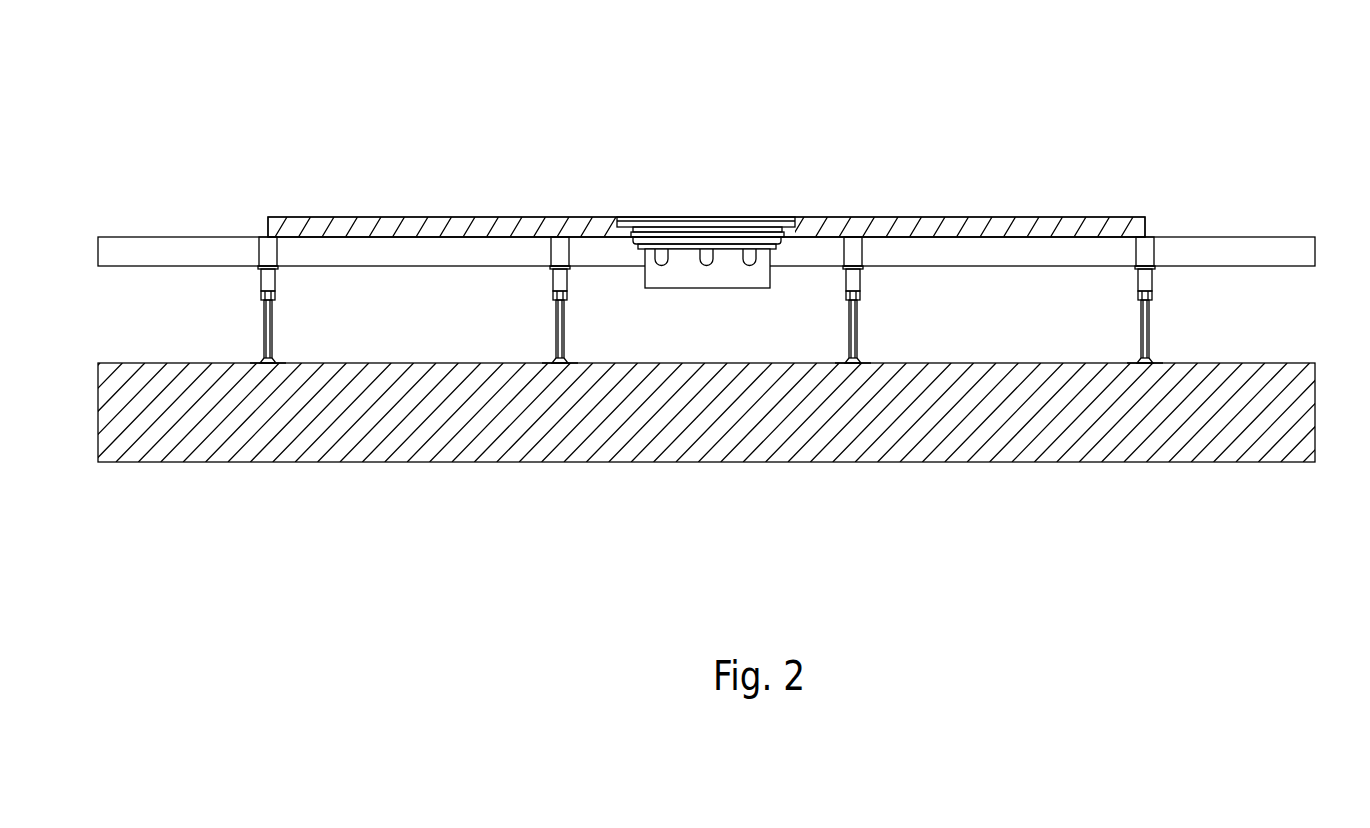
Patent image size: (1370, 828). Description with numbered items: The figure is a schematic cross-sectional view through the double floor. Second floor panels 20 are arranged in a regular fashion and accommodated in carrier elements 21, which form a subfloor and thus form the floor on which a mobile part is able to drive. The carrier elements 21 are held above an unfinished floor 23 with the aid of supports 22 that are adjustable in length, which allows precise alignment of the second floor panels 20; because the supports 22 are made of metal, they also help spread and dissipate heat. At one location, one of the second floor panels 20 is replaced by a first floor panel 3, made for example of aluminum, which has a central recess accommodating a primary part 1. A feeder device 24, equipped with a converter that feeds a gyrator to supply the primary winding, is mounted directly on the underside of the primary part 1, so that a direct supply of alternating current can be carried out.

The primary part 1 is at (740, 220).
The first floor panel 3 is at (588, 207).
The second floor panels 20 is at (995, 228).
The carrier elements 21 is at (1193, 252).
The supports 22 is at (852, 332).
The unfinished floor 23 is at (943, 415).
The feeder device 24 is at (680, 300).